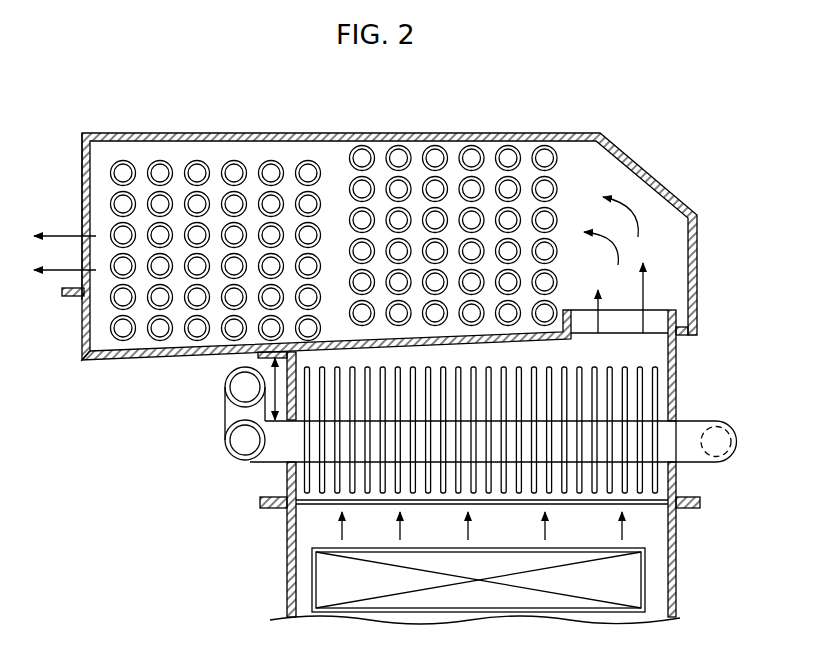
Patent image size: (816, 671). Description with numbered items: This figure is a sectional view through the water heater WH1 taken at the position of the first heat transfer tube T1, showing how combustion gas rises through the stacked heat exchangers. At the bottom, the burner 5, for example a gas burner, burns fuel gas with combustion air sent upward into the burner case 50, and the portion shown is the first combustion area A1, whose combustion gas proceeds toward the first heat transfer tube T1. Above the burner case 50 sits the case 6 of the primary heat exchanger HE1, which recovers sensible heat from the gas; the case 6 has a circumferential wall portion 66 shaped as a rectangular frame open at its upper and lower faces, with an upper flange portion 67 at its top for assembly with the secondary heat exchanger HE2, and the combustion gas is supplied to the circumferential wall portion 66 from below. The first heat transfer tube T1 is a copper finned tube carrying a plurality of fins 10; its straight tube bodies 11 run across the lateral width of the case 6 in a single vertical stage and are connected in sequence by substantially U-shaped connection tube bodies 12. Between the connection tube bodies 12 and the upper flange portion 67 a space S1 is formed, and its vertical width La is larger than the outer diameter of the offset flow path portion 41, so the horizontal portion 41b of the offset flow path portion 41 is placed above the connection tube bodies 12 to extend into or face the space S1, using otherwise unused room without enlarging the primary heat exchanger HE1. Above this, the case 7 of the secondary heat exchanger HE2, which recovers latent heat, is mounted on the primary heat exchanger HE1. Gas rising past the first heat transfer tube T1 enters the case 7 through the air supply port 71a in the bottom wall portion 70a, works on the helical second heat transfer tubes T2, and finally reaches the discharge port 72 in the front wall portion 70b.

The waste heat recovery unit WH1 is at (86, 113).
The case 7 is at (408, 133).
The front wall portion 70b is at (83, 165).
The discharge port 72 is at (83, 220).
The bottom wall portion 70a is at (118, 360).
The air supply port 71a is at (655, 322).
The secondary heat exchanger HE2 is at (246, 134).
The second heat transfer tubes T2 is at (222, 163).
The primary heat exchanger HE1 is at (679, 358).
The case 6 is at (678, 396).
The circumferential wall portion 66 is at (678, 379).
The upper flange portion 67 is at (262, 355).
The space S1 is at (278, 390).
The fins 10 is at (432, 492).
The straight tube bodies 11 is at (662, 453).
The first heat transfer tube T1 is at (735, 427).
The offset flow path portion 41 is at (214, 403).
The horizontal portion 41b is at (226, 392).
The vertical width La is at (230, 418).
The connection tube bodies 12 is at (248, 460).
The burner case 50 is at (677, 543).
The first combustion area A1 is at (490, 548).
The burner 5 is at (636, 588).